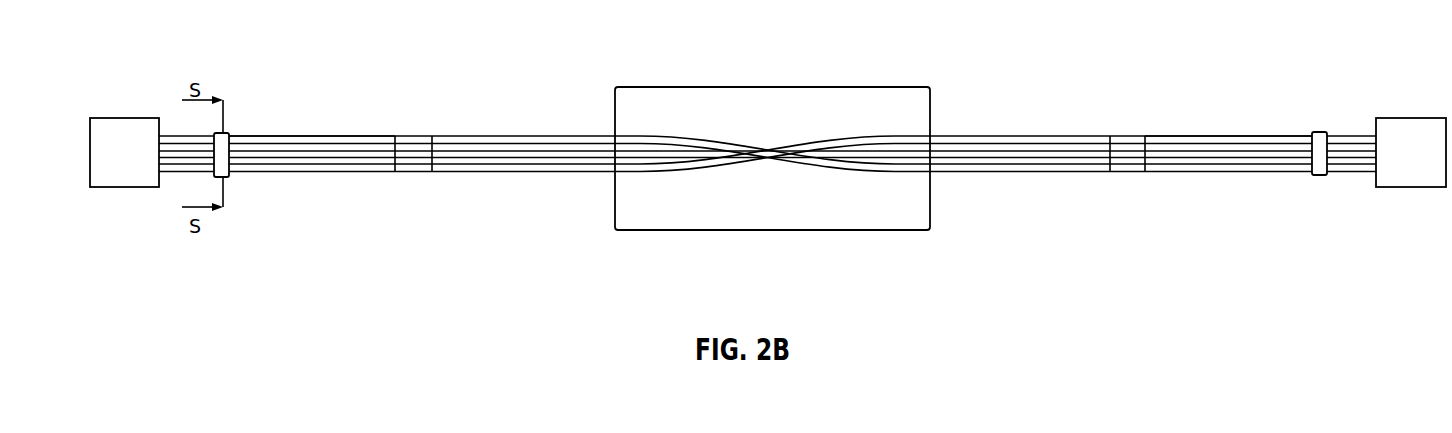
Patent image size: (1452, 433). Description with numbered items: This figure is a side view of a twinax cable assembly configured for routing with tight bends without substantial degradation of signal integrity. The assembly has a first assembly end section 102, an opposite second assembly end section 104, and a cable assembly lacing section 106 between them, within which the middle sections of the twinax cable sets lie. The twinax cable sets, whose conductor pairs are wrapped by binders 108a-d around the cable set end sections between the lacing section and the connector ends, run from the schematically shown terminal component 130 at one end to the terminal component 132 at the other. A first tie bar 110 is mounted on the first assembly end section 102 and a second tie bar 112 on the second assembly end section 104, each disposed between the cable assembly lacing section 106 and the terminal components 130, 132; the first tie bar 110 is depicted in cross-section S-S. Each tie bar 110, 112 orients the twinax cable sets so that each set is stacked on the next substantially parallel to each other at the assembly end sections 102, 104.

The first assembly end section 102 is at (272, 127).
The second assembly end section 104 is at (1228, 123).
The cable assembly lacing section 106 is at (795, 231).
The conductors 108a-d is at (409, 180).
The first tie bar 110 is at (227, 167).
The second tie bar 112 is at (1320, 168).
The terminal component 130 is at (110, 118).
The terminal component 132 is at (1390, 118).